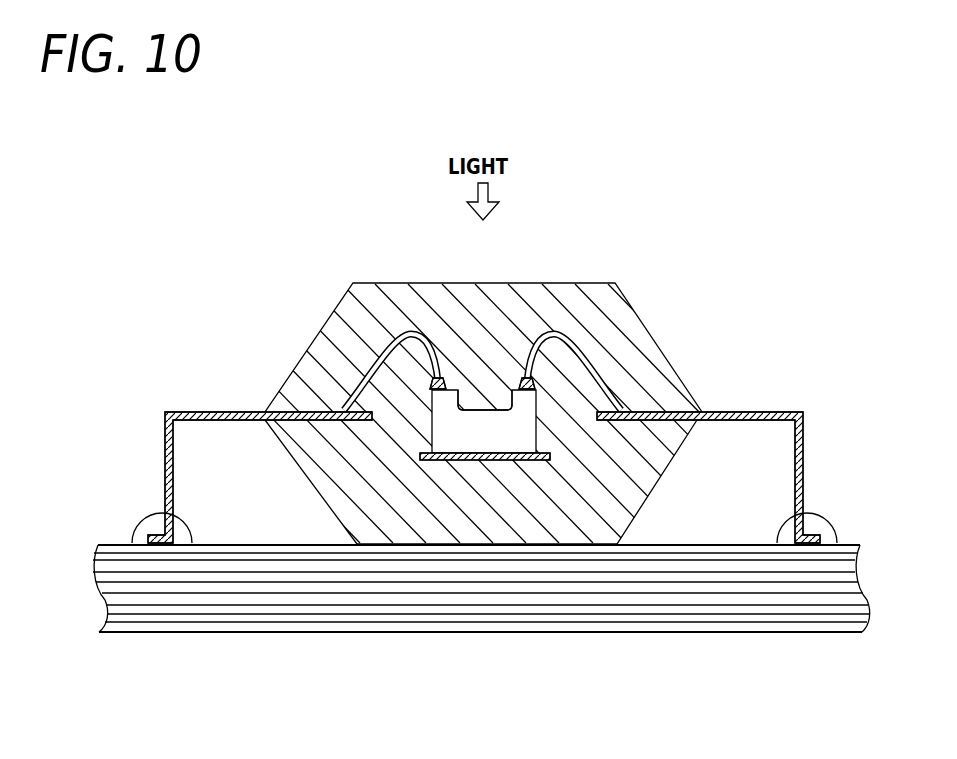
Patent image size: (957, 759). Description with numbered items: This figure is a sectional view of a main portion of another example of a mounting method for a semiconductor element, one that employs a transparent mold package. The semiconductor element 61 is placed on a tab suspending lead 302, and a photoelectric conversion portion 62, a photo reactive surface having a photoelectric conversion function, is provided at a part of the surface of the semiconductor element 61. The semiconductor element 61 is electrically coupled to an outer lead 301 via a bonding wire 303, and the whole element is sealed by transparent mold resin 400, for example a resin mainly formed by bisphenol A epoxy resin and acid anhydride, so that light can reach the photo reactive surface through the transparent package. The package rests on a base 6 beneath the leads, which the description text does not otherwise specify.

The circuit board 6 is at (257, 605).
The outer lead 301 is at (193, 411).
The tab suspending lead 302 is at (460, 461).
The bonding wire 303 is at (330, 325).
The transparent mold resin 400 is at (547, 303).
The semiconductor element 61 is at (497, 441).
The photoelectric conversion portion 62 is at (475, 388).